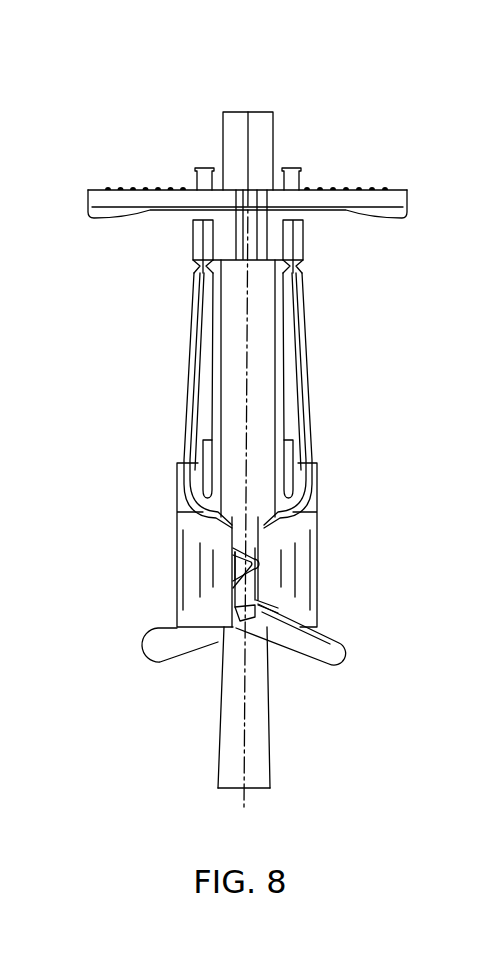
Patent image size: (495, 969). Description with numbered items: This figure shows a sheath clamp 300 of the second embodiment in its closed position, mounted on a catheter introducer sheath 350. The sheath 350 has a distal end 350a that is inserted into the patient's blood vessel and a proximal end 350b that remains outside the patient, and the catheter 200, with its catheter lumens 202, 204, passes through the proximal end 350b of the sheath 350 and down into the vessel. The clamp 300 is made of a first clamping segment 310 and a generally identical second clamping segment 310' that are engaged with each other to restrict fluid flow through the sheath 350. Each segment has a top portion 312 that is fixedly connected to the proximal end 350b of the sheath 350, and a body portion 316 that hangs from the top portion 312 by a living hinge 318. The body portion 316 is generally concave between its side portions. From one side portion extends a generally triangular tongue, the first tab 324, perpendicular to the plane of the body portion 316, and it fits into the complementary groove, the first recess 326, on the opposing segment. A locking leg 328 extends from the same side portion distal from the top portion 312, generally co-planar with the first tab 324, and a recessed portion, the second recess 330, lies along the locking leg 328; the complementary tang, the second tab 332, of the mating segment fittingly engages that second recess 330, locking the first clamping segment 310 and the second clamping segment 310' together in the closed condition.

The sheath clamp 300 is at (140, 95).
The catheter 200 is at (239, 110).
The proximal end 350b is at (350, 186).
The top portion 312 is at (189, 237).
The living hinge 318 is at (191, 272).
The first clamping segment 310 is at (348, 394).
The second clamping segment 310' is at (145, 394).
The catheter lumen 204 is at (269, 456).
The catheter lumen 202 is at (225, 488).
The first recess 326 is at (259, 558).
The first tab 324 is at (234, 569).
The body portion 316 is at (176, 584).
The second tab 332 is at (258, 603).
The locking leg 328 is at (350, 652).
The second recess 330 is at (244, 621).
The catheter introducer sheath 350 is at (272, 745).
The distal end 350a is at (272, 779).